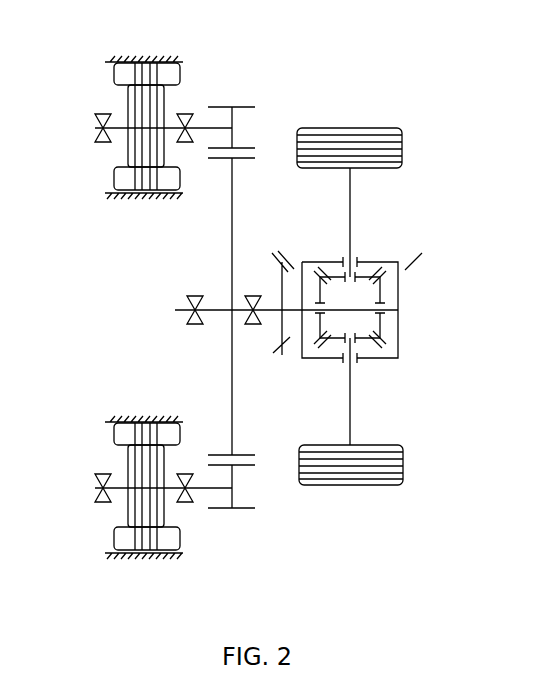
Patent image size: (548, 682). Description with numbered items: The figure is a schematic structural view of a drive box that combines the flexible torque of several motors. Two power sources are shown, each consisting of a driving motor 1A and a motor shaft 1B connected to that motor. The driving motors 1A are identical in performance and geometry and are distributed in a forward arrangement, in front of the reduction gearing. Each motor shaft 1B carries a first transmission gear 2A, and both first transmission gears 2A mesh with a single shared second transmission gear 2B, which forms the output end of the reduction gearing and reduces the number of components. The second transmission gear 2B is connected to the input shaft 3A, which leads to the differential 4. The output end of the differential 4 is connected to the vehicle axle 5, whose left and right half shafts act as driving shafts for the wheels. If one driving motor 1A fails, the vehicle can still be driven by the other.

The driving motor 1A is at (117, 72).
The motor shaft 1B is at (200, 127).
The first transmission gear 2A is at (237, 118).
The second transmission gear 2B is at (235, 225).
The input shaft 3A is at (267, 312).
The differential 4 is at (403, 347).
The vehicle axle 5 is at (358, 208).